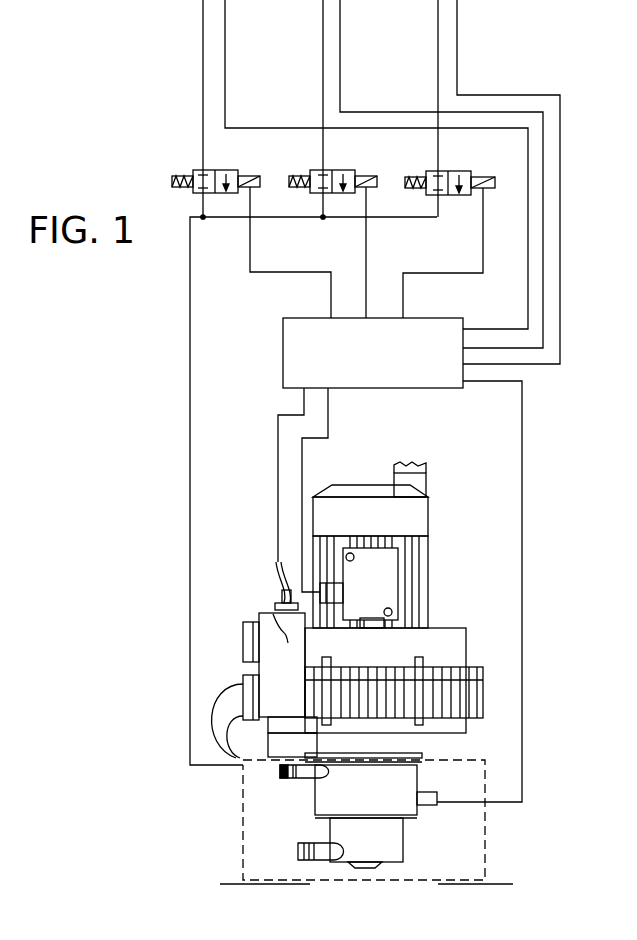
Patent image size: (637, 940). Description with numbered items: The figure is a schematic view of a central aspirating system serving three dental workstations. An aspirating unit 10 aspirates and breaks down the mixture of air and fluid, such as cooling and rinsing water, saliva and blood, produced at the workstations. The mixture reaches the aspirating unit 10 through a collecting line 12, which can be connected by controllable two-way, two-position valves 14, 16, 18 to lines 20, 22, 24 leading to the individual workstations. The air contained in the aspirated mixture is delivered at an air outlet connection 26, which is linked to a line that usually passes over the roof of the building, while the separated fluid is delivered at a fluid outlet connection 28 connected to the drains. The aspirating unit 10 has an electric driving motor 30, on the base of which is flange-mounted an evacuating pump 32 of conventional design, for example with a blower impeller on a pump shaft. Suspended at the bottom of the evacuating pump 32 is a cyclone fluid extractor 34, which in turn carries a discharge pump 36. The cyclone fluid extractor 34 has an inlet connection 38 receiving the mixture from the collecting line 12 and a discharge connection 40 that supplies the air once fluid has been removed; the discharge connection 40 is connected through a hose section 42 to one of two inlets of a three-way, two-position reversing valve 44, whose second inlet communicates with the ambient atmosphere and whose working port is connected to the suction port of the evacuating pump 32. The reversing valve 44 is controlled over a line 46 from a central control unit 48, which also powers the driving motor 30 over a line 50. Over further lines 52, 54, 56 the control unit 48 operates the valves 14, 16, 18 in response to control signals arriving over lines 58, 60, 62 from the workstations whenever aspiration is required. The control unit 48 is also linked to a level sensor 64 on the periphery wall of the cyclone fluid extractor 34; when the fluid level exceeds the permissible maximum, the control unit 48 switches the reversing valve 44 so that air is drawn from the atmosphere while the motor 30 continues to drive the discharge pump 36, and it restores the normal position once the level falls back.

The aspirating unit 10 is at (505, 616).
The collecting line 12 is at (190, 490).
The controllable 2/2 valve 14 is at (237, 171).
The controllable 2/2 valve 16 is at (347, 171).
The controllable 2/2 valve 18 is at (447, 170).
The line 20 is at (203, 92).
The line 22 is at (323, 50).
The line 24 is at (438, 72).
The air outlet connection 26 is at (428, 470).
The outlet fitting 28 is at (299, 850).
The electric driving motor 30 is at (372, 593).
The evacuating pump 32 is at (435, 700).
The cyclone fluid extractor 34 is at (392, 794).
The discharge pump 36 is at (380, 848).
The inlet connection 38 is at (307, 776).
The discharge connection 40 is at (278, 750).
The hose section 42 is at (222, 730).
The 3/2 reversing valve 44 is at (274, 606).
The line 46 is at (277, 460).
The central control unit 48 is at (396, 361).
The line 50 is at (303, 460).
The line 52 is at (251, 265).
The line 54 is at (368, 265).
The line 56 is at (485, 282).
The line 58 is at (245, 78).
The line 60 is at (340, 37).
The line 62 is at (458, 70).
The level sensor 64 is at (426, 802).